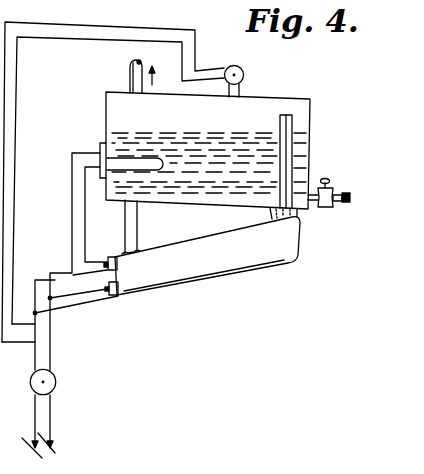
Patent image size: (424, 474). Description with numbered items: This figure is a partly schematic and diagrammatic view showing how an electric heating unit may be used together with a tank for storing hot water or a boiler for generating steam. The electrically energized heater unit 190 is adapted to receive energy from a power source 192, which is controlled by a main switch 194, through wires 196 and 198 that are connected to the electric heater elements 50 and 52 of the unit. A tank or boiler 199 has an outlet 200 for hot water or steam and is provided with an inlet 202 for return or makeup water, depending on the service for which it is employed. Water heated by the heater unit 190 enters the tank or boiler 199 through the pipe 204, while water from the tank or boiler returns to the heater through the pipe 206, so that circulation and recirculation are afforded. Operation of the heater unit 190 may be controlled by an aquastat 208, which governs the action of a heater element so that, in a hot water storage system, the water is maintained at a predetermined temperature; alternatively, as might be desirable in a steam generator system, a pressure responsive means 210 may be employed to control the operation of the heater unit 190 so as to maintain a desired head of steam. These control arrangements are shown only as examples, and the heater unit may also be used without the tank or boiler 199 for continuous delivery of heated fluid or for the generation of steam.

The electric heater element 50 is at (115, 250).
The electric heater element 52 is at (119, 300).
The electrically energized heater unit 190 is at (257, 265).
The power source 192 is at (55, 435).
The main switch 194 is at (56, 382).
The wire 196 is at (102, 256).
The wire 198 is at (103, 302).
The tank or boiler 199 is at (312, 115).
The outlet 200 is at (129, 80).
The inlet 202 is at (343, 190).
The pipe 204 is at (292, 167).
The pipe 206 is at (138, 228).
The aquastat 208 is at (138, 161).
The pressure responsive means 210 is at (244, 75).